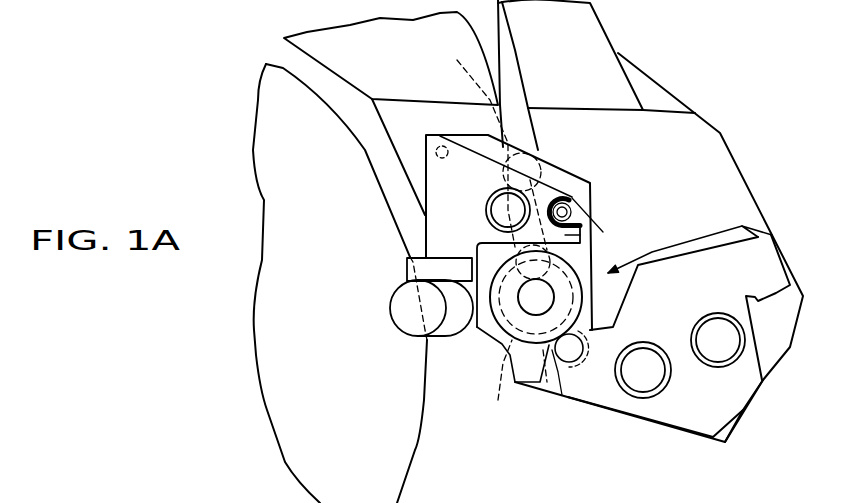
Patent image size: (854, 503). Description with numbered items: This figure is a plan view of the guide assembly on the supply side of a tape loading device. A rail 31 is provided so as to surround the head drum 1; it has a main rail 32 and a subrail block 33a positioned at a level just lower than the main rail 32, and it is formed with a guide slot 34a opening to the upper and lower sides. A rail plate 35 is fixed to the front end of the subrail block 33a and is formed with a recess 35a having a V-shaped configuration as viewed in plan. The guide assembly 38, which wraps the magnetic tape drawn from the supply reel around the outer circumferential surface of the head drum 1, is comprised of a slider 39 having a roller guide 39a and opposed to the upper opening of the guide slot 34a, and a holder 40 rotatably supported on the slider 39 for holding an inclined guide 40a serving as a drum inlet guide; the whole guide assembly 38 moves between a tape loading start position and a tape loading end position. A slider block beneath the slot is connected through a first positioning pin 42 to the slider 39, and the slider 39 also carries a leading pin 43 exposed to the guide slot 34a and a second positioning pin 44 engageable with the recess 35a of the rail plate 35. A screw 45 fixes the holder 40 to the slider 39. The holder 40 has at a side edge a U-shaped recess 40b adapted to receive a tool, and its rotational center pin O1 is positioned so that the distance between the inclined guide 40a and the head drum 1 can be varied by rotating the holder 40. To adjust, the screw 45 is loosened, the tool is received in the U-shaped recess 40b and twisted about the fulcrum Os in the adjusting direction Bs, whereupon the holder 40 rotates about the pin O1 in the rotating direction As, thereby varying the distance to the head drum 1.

The head drum 1 is at (277, 87).
The rail 31 is at (663, 241).
The main rail 32 is at (606, 58).
The subrail block 33a is at (732, 190).
The guide slot 34a is at (502, 53).
The rail plate 35 is at (667, 412).
The recess 35a is at (562, 396).
The guide assembly 38 is at (772, 235).
The slider 39 is at (558, 178).
The roller guide 39a is at (498, 400).
The holder 40 is at (437, 232).
The inclined guide 40a is at (447, 330).
The U-shaped recess 40b is at (611, 228).
The first positioning pin 42 is at (492, 143).
The leading pin 43 is at (545, 268).
The second positioning pin 44 is at (600, 338).
The screw 45 is at (487, 205).
The rotational center (pin) O1 is at (433, 133).
The fulcrum Os is at (547, 200).
The rotating direction As is at (403, 390).
The adjusting direction Bs is at (585, 158).